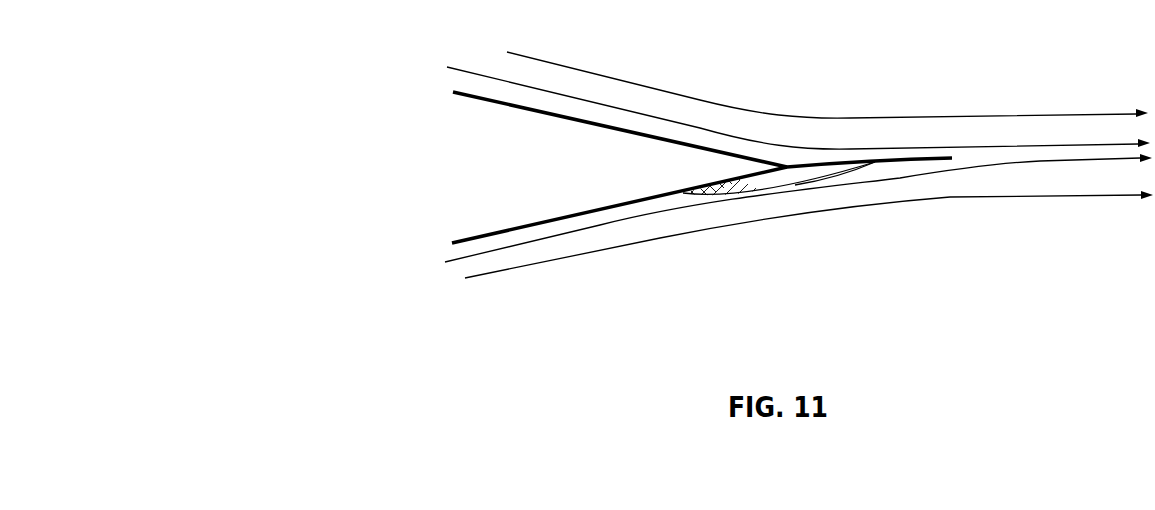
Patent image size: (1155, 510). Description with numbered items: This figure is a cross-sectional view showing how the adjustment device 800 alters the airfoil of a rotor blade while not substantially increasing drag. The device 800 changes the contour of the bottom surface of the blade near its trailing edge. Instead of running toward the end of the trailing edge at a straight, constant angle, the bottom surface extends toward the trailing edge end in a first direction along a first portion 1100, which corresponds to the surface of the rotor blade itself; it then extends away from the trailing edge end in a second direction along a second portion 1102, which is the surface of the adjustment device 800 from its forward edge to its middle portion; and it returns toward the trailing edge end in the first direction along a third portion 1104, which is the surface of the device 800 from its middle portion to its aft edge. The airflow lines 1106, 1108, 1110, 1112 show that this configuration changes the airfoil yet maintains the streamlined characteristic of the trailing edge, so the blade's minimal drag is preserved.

The adjustment device 800 is at (795, 187).
The first portion 1100 is at (594, 222).
The second portion 1102 is at (741, 200).
The third portion 1104 is at (859, 185).
The airflow line 1106 is at (581, 70).
The airflow line 1108 is at (455, 65).
The airflow line 1110 is at (453, 262).
The airflow line 1112 is at (542, 263).